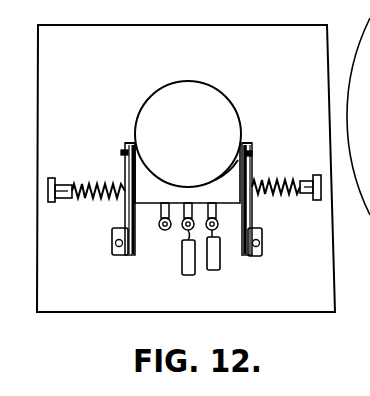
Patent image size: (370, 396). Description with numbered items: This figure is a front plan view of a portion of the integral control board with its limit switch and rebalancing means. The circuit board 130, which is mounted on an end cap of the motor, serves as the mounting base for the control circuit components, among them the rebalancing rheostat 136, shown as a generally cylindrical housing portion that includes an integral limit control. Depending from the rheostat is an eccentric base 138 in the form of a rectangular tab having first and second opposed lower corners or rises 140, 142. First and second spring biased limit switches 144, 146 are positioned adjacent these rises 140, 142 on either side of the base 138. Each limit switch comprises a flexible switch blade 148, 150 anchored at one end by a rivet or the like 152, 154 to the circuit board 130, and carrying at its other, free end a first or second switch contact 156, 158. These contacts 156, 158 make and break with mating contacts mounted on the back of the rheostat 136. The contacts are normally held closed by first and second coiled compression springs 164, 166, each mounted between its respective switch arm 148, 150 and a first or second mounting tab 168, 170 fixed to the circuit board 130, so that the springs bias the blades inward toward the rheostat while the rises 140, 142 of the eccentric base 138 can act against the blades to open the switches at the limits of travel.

The circuit board 130 is at (287, 60).
The rebalancing rheostat 136 is at (203, 125).
The eccentric base 138 is at (229, 169).
The first rise 140 is at (134, 213).
The second rise 142 is at (240, 205).
The first spring biased limit switch 144 is at (123, 152).
The second spring biased limit switch 146 is at (251, 158).
The first flexible switch blade 148 is at (125, 172).
The second flexible switch blade 150 is at (252, 165).
The rivet 152 is at (114, 246).
The rivet 154 is at (263, 240).
The first switch contact 156 is at (127, 143).
The second switch contact 158 is at (251, 146).
The first coiled compression spring 164 is at (100, 200).
The second coiled compression spring 166 is at (270, 194).
The first mounting tab 168 is at (51, 200).
The second mounting tab 170 is at (304, 179).